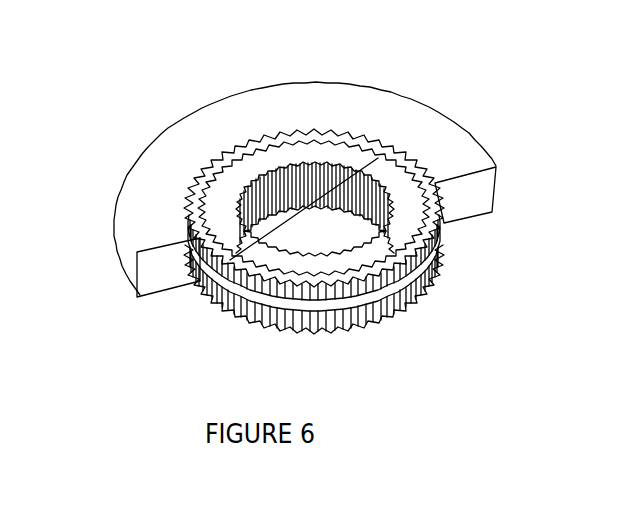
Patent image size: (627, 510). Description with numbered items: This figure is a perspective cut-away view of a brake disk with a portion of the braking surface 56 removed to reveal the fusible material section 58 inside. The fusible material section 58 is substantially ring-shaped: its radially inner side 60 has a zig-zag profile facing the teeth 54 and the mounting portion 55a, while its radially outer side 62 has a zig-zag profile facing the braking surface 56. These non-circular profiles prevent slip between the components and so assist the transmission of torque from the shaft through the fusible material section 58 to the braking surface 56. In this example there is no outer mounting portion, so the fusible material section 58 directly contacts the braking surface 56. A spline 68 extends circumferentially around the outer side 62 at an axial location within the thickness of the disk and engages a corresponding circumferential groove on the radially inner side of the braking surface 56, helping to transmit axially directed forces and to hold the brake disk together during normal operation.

The teeth 54 is at (253, 183).
The top face of gear 55a is at (275, 157).
The braking surface 56 is at (387, 125).
The fusible material section 58 is at (428, 183).
The radially inner side 60 is at (202, 280).
The radially outer side 62 is at (190, 201).
The spline 68 is at (240, 310).